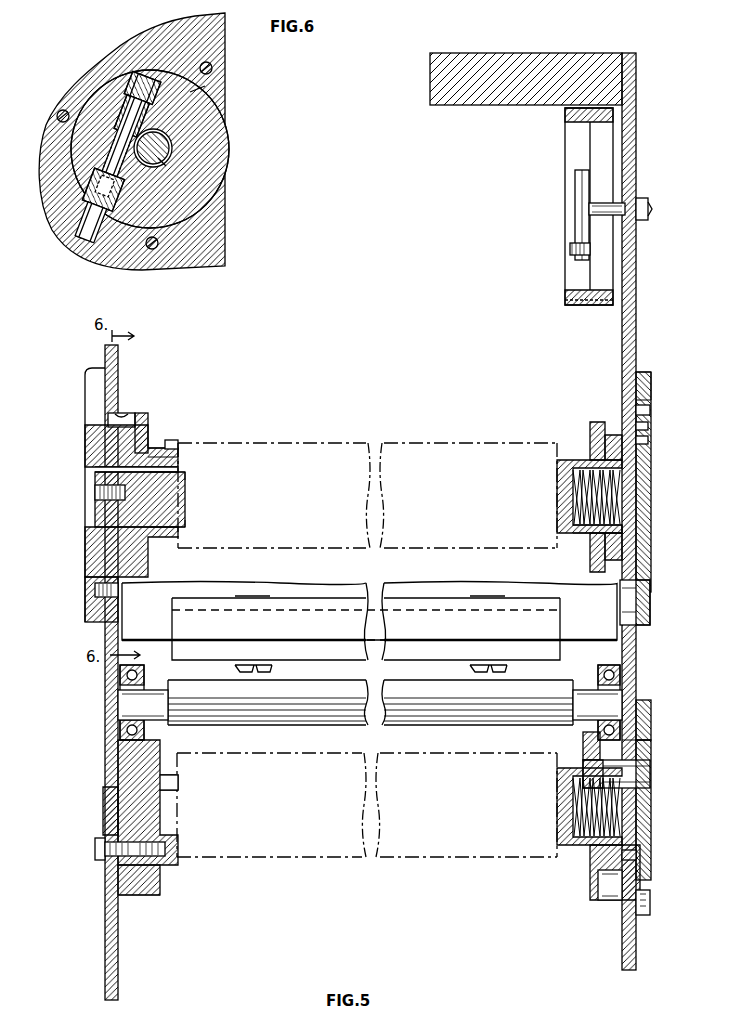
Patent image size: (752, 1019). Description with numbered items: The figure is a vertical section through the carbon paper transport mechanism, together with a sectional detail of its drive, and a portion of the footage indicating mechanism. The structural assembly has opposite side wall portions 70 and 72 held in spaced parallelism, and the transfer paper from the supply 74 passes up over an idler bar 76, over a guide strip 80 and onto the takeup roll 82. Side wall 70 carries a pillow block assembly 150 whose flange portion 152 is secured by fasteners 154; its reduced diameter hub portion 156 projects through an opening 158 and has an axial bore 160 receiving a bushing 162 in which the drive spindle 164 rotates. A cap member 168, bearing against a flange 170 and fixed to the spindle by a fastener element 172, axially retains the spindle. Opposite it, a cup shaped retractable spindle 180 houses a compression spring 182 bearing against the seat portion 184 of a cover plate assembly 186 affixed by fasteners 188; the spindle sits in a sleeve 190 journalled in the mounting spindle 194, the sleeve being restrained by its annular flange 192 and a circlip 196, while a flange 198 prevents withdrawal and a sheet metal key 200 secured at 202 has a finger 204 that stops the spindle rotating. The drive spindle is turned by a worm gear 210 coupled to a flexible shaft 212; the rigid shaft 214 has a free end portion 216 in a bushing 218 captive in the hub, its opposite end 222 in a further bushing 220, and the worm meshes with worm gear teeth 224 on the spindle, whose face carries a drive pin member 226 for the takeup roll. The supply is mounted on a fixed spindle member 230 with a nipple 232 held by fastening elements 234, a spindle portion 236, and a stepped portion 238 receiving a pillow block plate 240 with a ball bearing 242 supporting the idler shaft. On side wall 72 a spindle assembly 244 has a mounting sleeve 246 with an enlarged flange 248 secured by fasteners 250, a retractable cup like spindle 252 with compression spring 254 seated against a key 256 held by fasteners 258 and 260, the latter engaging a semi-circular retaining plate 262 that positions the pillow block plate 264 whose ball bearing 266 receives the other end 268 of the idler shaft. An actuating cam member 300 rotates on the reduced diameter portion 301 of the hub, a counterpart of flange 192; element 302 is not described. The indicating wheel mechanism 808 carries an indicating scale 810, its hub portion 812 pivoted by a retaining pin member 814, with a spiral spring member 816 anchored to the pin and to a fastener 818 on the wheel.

In FIG. 5, the side wall portion 70 is at (105, 940).
In FIG. 5, the side wall portion 72 is at (634, 282).
In FIG. 5, the supply of carbon transfer paper 74 is at (440, 866).
In FIG. 5, the idler bar 76 is at (562, 690).
In FIG. 5, the guide strip 80 is at (556, 620).
In FIG. 5, the takeup roll 82 is at (347, 437).
In FIG. 5, the pillow block assembly 150 is at (146, 412).
In FIG. 5, the flange portion 152 is at (92, 372).
In FIG. 6, the fasteners 154 is at (212, 68).
In FIG. 5, the fasteners 154 is at (88, 600).
In FIG. 6, the hub portion 156 is at (210, 163).
In FIG. 5, the hub portion 156 is at (160, 450).
In FIG. 6, the opening 158 is at (196, 90).
In FIG. 5, the opening 158 is at (128, 412).
In FIG. 5, the axial bore 160 is at (180, 472).
In FIG. 5, the bushing 162 is at (186, 512).
In FIG. 6, the drive spindle 164 is at (166, 166).
In FIG. 5, the drive spindle 164 is at (186, 486).
In FIG. 5, the cap member 168 is at (90, 530).
In FIG. 5, the flange 170 is at (95, 468).
In FIG. 5, the fastener element 172 is at (95, 492).
In FIG. 5, the retractable spindle 180 is at (567, 460).
In FIG. 5, the compression spring 182 is at (612, 468).
In FIG. 5, the seat portion 184 is at (652, 500).
In FIG. 5, the cover plate assembly 186 is at (656, 552).
In FIG. 5, the fasteners 188 is at (650, 598).
In FIG. 5, the sleeve 190 is at (612, 435).
In FIG. 5, the annular flange 192 is at (596, 422).
In FIG. 5, the mounting spindle 194 is at (650, 410).
In FIG. 5, the circlip 196 is at (648, 426).
In FIG. 5, the flange 198 is at (640, 530).
In FIG. 5, the sheet metal key 200 is at (652, 376).
In FIG. 5, the securing point 202 is at (652, 398).
In FIG. 5, the axially directed finger 204 is at (648, 440).
In FIG. 6, the worm gear 210 is at (95, 80).
In FIG. 6, the flexible shaft 212 is at (85, 220).
In FIG. 6, the rigid shaft 214 is at (57, 113).
In FIG. 6, the free end portion 216 is at (135, 66).
In FIG. 6, the bushing 218 is at (120, 85).
In FIG. 6, the bushing 220 is at (95, 178).
In FIG. 6, the opposite end 222 is at (104, 158).
In FIG. 6, the worm gear teeth 224 is at (172, 146).
In FIG. 5, the worm gear teeth 224 is at (88, 440).
In FIG. 5, the drive pin member 226 is at (176, 444).
In FIG. 5, the fixed spindle member 230 is at (170, 888).
In FIG. 5, the nipple 232 is at (103, 800).
In FIG. 5, the fastening elements 234 is at (95, 845).
In FIG. 5, the spindle portion 236 is at (178, 782).
In FIG. 5, the stepped portion 238 is at (132, 897).
In FIG. 5, the pillow block plate 240 is at (157, 678).
In FIG. 5, the ball bearing 242 is at (120, 704).
In FIG. 5, the spindle assembly 244 is at (590, 862).
In FIG. 5, the mounting sleeve 246 is at (652, 742).
In FIG. 5, the enlarged flange 248 is at (652, 710).
In FIG. 5, the fasteners 250 is at (650, 902).
In FIG. 5, the retractable cup like spindle 252 is at (566, 854).
In FIG. 5, the compression spring 254 is at (630, 786).
In FIG. 5, the key 256 is at (652, 806).
In FIG. 5, the fasteners 258 is at (636, 856).
In FIG. 5, the fasteners 260 is at (651, 760).
In FIG. 5, the semi-circular retaining plate 262 is at (583, 746).
In FIG. 5, the pillow block plate 264 is at (604, 900).
In FIG. 5, the ball bearing 266 is at (629, 679).
In FIG. 5, the other end 268 is at (612, 704).
In FIG. 5, the actuating cam member 300 is at (150, 420).
In FIG. 5, the reduced diameter portion 301 is at (210, 462).
In FIG. 5, the shoulder 302 is at (172, 446).
In FIG. 5, the indicating wheel mechanism 808 is at (561, 312).
In FIG. 5, the indicating scale 810 is at (606, 305).
In FIG. 5, the hub portion 812 is at (612, 206).
In FIG. 5, the retaining pin member 814 is at (642, 200).
In FIG. 5, the spiral spring member 816 is at (578, 190).
In FIG. 5, the fastener 818 is at (580, 252).